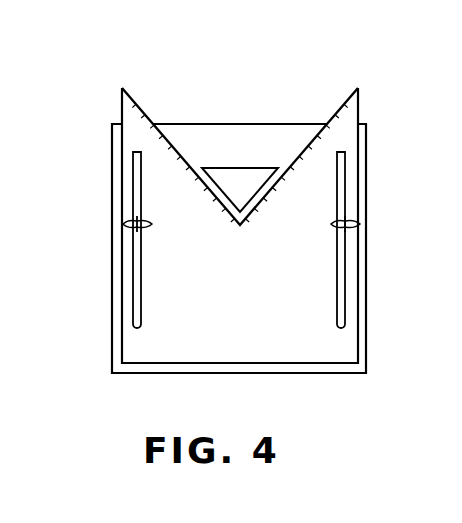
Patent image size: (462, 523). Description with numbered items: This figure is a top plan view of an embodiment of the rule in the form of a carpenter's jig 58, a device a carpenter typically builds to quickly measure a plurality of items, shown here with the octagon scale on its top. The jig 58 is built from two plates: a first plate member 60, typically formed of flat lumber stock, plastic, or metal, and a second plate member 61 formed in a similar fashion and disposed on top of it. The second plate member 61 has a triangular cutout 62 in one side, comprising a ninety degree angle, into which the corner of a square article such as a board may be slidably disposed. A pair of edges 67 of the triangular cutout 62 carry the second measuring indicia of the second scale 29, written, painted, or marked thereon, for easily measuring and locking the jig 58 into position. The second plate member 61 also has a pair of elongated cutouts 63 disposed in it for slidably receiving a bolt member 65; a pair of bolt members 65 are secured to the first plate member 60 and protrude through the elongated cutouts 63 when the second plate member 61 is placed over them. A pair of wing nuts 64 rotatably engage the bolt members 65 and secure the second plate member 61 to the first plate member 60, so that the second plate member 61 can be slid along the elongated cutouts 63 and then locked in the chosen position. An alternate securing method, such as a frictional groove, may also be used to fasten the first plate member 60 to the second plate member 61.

The jig 58 is at (147, 90).
The first plate member 60 is at (341, 388).
The second plate member 61 is at (240, 331).
The triangular cutout 62 is at (191, 162).
The elongated cutouts 63 is at (137, 330).
The wing nuts 64 is at (125, 222).
The bolt members 65 is at (137, 226).
The edges 67 is at (170, 143).
The second scale 29 is at (212, 232).